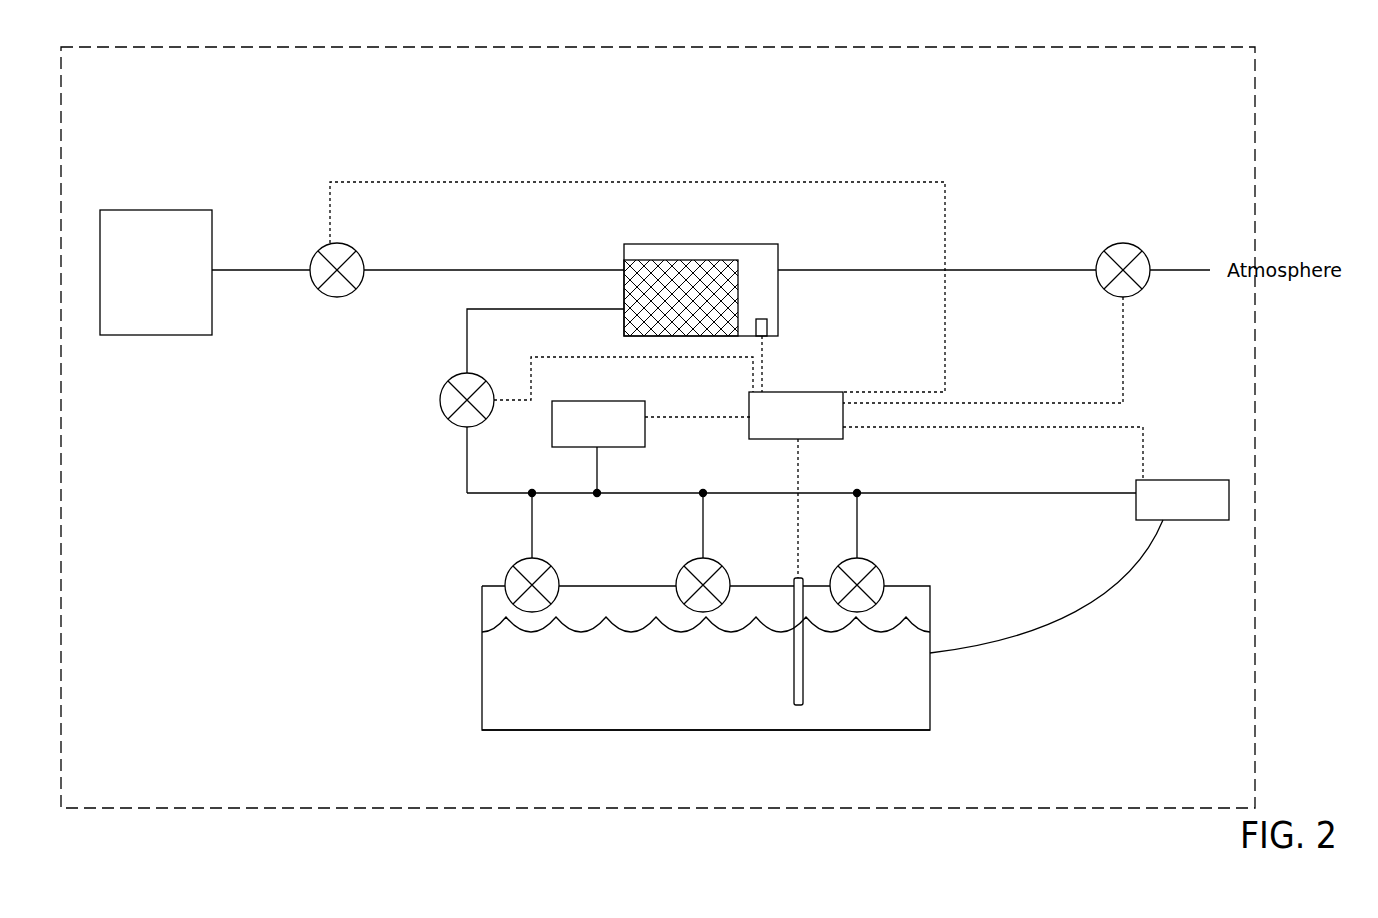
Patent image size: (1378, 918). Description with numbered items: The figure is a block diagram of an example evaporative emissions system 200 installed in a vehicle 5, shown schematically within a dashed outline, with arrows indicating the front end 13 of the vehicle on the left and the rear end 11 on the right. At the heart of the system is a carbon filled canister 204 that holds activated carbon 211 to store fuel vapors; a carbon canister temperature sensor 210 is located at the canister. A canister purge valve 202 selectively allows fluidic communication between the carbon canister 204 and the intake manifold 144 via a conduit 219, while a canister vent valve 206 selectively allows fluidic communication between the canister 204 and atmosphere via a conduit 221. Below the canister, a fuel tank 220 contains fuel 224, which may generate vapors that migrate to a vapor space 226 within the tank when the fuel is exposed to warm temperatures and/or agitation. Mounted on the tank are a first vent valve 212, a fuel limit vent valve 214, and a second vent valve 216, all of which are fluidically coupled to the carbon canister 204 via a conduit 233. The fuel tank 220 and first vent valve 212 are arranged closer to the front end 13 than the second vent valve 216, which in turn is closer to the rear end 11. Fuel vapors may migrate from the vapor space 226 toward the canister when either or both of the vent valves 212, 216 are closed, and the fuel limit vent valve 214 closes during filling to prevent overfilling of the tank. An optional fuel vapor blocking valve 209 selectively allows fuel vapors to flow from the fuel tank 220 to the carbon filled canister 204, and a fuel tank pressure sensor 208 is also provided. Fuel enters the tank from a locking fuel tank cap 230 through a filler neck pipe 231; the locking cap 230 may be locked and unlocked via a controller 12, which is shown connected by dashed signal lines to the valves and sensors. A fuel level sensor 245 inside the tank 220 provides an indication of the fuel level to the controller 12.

The vehicle 5 is at (122, 48).
The evaporative emissions system 200 is at (187, 104).
The front end 13 is at (74, 440).
The rear end 11 is at (1233, 432).
The intake manifold 144 is at (205, 272).
The conduit 219 is at (412, 270).
The canister purge valve 202 is at (339, 243).
The carbon filled canister 204 is at (686, 244).
The activated carbon 211 is at (624, 268).
The carbon canister temperature sensor 210 is at (764, 338).
The conduit 221 is at (848, 270).
The canister vent valve 206 is at (1124, 243).
The fuel vapor blocking valve 209 is at (444, 379).
The fuel tank pressure sensor 208 is at (591, 401).
The controller 12 is at (946, 485).
The conduit 233 is at (937, 493).
The locking fuel tank cap 230 is at (1182, 500).
The filler neck pipe 231 is at (1097, 600).
The first vent valve 212 is at (541, 558).
The fuel limit vent valve 214 is at (712, 558).
The second vent valve 216 is at (866, 558).
The fuel tank 220 is at (930, 600).
The fuel 224 is at (918, 713).
The vapor space 226 is at (490, 610).
The fuel level sensor 245 is at (803, 680).